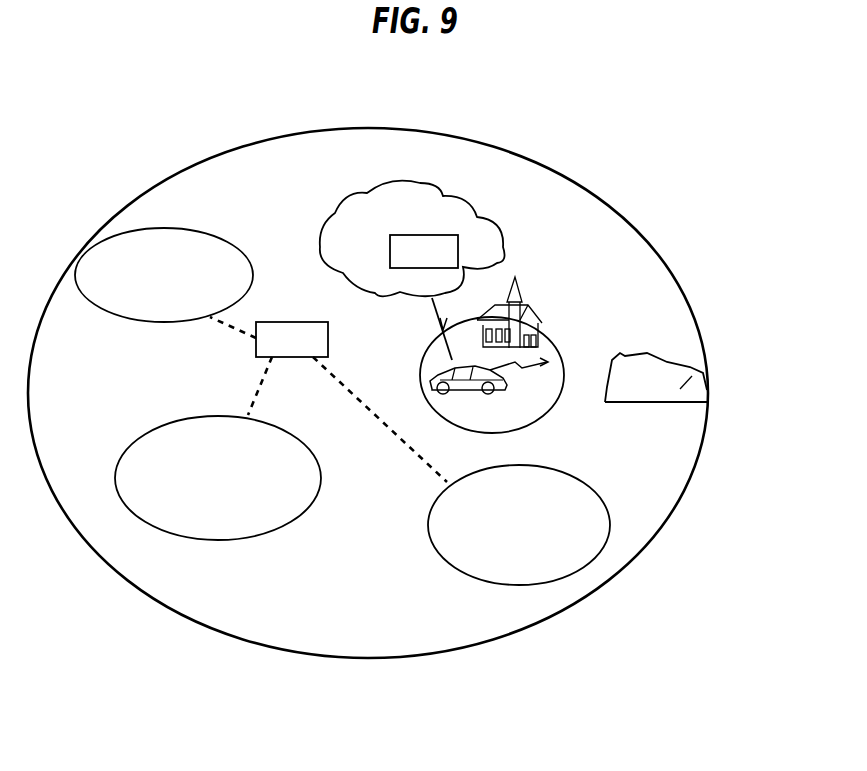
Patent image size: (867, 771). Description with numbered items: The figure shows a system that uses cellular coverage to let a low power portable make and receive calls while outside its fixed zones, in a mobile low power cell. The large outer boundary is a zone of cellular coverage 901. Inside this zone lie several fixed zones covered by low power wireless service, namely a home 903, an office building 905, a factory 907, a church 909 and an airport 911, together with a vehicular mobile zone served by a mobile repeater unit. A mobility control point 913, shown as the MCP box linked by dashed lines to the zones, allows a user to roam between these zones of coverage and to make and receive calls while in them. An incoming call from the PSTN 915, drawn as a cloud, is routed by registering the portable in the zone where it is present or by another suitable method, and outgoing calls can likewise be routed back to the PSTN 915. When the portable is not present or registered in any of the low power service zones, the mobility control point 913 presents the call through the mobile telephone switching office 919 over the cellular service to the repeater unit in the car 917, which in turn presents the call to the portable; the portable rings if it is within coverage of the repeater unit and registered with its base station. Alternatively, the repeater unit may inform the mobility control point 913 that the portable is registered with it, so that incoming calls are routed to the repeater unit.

The zone of cellular coverage 901 is at (640, 234).
The home 903 is at (688, 385).
The office building 905 is at (157, 433).
The factory 907 is at (123, 235).
The church 909 is at (538, 345).
The airport 911 is at (558, 470).
The mobility control point 913 is at (278, 322).
The PSTN 915 is at (423, 197).
The car 917 is at (430, 386).
The mobile telephone switching office 919 is at (453, 235).